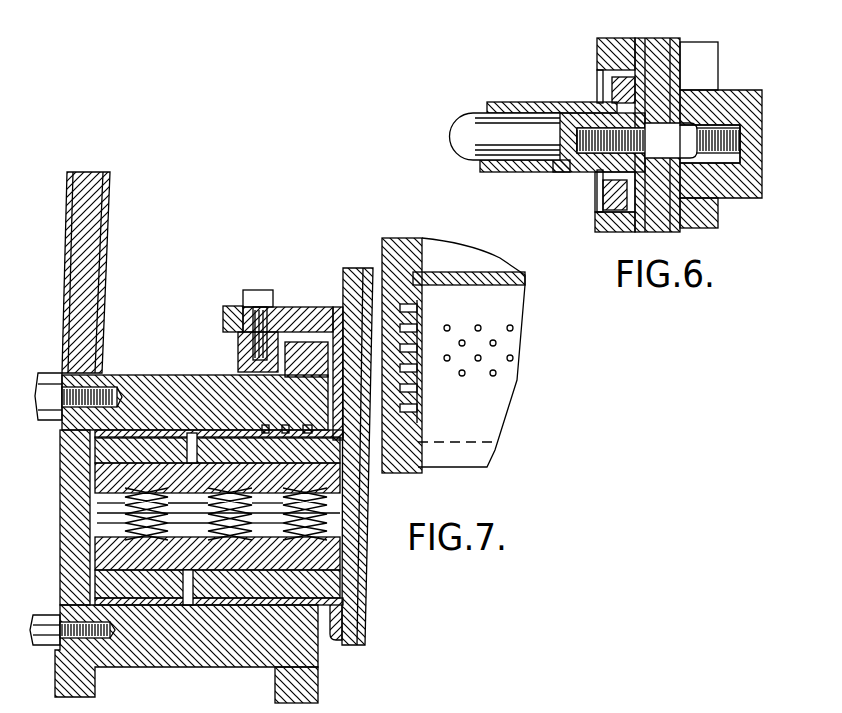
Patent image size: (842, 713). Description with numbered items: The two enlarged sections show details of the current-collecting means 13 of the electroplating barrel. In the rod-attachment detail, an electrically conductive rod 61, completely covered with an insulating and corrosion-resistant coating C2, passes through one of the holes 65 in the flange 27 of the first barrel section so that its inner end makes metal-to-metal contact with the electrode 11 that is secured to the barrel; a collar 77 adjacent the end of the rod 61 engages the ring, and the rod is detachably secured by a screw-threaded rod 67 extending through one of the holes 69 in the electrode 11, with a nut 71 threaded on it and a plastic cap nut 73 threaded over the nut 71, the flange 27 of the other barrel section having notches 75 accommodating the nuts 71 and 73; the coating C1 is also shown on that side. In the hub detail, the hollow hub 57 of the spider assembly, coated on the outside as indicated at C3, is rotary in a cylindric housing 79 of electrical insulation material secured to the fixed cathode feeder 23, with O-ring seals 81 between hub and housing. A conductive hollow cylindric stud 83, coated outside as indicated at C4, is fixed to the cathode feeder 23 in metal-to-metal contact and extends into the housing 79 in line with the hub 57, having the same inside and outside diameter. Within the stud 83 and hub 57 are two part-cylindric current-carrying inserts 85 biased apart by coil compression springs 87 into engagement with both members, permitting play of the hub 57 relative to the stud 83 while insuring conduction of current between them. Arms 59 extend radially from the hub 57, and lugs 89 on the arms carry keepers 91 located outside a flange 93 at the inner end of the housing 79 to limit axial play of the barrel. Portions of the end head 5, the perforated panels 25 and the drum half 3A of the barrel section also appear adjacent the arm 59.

In FIG. 7, the cathode feeder 23 is at (92, 172).
In FIG. 7, the coating C4 is at (67, 212).
In FIG. 7, the housing 79 is at (165, 375).
In FIG. 7, the flange 93 is at (300, 343).
In FIG. 7, the lugs 89 is at (227, 315).
In FIG. 7, the keepers 91 is at (238, 350).
In FIG. 7, the coating C2 is at (340, 278).
In FIG. 6, the coating C2 is at (533, 102).
In FIG. 7, the arms 59 is at (353, 272).
In FIG. 7, the current-carrying inserts 85 is at (107, 477).
In FIG. 7, the coil compression springs 87 is at (97, 517).
In FIG. 7, the stud 83 is at (97, 582).
In FIG. 7, the current collecting means 13 is at (372, 662).
In FIG. 7, the coating C3 is at (203, 602).
In FIG. 7, the hub 57 is at (240, 583).
In FIG. 7, the O-ring seals 81 is at (317, 640).
In FIG. 7, the end head 5 is at (405, 240).
In FIG. 7, the panels 25 is at (528, 280).
In FIG. 7, the drum half 3A is at (530, 362).
In FIG. 6, the electrode 11 is at (663, 38).
In FIG. 6, the flange 27 is at (627, 20).
In FIG. 6, the notches 75 is at (703, 63).
In FIG. 6, the holes 65 is at (597, 77).
In FIG. 6, the collar 77 is at (610, 192).
In FIG. 6, the rods 61 is at (473, 128).
In FIG. 6, the screw-threaded rods 67 is at (757, 147).
In FIG. 6, the holes 69 is at (673, 87).
In FIG. 6, the cap nuts 73 is at (755, 107).
In FIG. 6, the nuts 71 is at (720, 200).
In FIG. 6, the clamp C1 is at (673, 233).